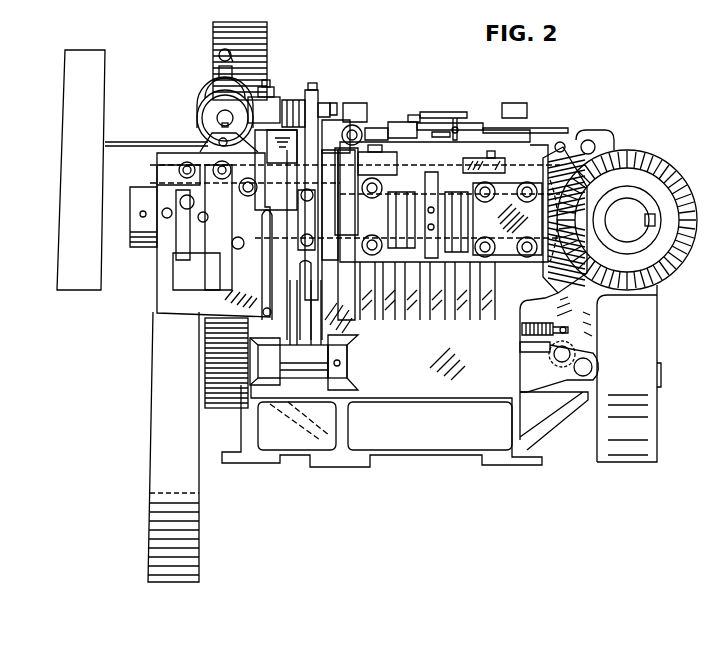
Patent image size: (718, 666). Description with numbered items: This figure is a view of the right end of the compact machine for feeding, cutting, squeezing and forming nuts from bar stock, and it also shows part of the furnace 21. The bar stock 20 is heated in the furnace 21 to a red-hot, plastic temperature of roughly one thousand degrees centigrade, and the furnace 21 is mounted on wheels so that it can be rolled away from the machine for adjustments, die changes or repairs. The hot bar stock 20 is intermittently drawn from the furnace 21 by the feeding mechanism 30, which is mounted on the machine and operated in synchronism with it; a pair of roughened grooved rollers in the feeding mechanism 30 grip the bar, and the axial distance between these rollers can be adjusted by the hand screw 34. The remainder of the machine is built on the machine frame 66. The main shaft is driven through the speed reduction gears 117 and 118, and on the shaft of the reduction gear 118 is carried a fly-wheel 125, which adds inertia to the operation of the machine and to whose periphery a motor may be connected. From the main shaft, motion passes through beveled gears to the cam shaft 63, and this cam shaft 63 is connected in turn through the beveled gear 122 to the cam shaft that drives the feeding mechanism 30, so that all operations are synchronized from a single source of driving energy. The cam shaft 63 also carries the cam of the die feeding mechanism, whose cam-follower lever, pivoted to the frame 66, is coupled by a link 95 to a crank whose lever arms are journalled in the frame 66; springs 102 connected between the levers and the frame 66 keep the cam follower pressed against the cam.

The bar stock 20 is at (128, 142).
The furnace 21 is at (105, 78).
The feeding mechanism 30 is at (193, 120).
The hand screw 34 is at (216, 53).
The cam shaft 63 is at (636, 228).
The machine frame 66 is at (424, 373).
The link 95 is at (521, 360).
The springs 102 is at (521, 329).
The speed reduction gear 117 is at (268, 32).
The speed reduction gear 118 is at (215, 408).
The beveled gear 122 is at (668, 270).
The fly-wheel 125 is at (201, 541).